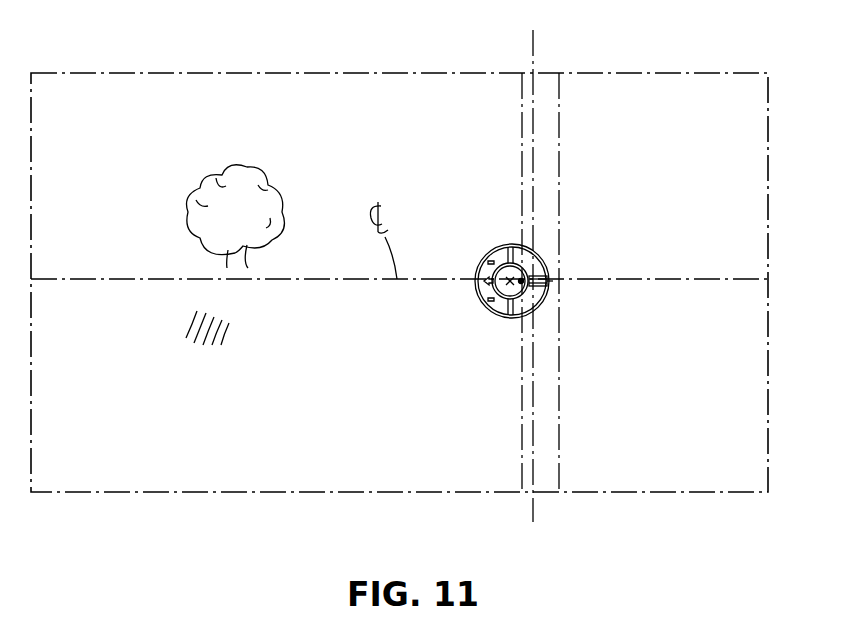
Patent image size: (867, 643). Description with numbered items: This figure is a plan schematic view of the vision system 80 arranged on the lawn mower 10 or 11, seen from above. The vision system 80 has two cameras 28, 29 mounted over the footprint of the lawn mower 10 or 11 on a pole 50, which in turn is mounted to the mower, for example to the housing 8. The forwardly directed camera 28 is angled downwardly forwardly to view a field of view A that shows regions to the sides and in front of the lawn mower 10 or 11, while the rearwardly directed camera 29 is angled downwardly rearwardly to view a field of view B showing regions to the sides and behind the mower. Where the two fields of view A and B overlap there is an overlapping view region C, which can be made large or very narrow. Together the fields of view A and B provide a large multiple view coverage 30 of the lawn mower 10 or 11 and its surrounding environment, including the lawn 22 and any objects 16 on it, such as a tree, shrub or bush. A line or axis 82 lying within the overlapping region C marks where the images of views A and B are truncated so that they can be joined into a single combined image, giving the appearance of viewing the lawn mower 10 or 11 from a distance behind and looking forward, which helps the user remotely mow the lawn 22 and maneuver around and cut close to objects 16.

The multiple view coverage 30 is at (428, 73).
The line or axis 82 is at (533, 53).
The vision system 80 is at (650, 171).
The lawn mower 10 is at (399, 315).
The lawn mower 11 is at (578, 305).
The object 16 is at (252, 165).
The lawn 22 is at (185, 330).
The housing 8 is at (500, 244).
The pole 50 is at (523, 279).
The forwardly directed camera 28 is at (603, 257).
The rearwardly directed camera 29 is at (540, 272).
The field of view A is at (344, 360).
The field of view B is at (677, 409).
The overlapping view region C is at (549, 371).